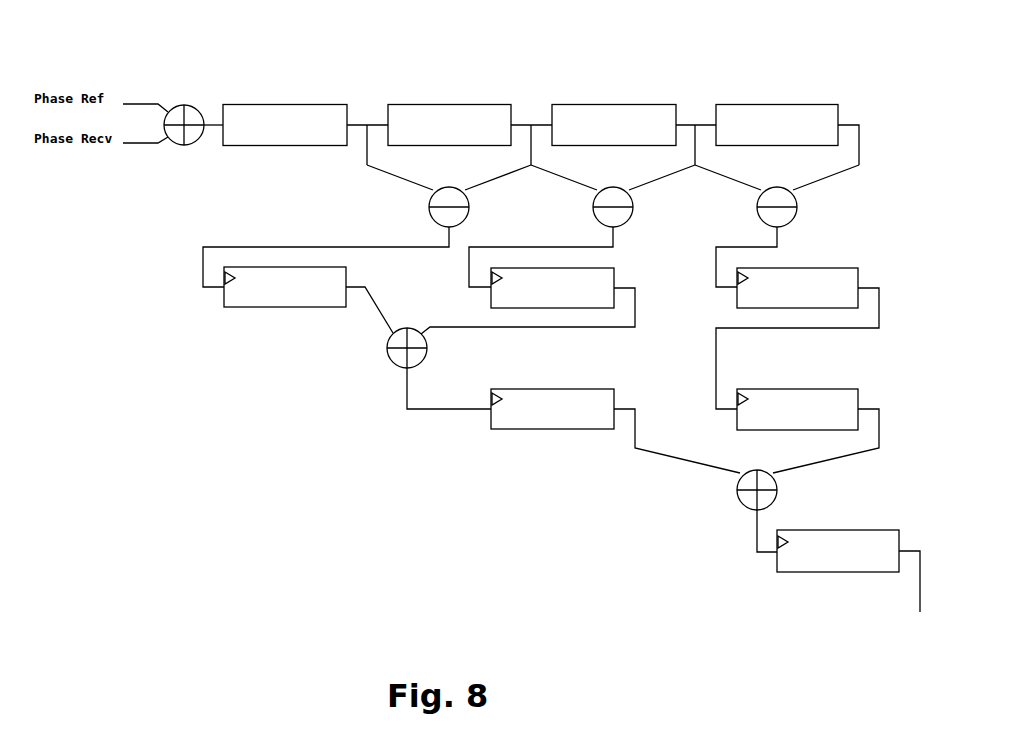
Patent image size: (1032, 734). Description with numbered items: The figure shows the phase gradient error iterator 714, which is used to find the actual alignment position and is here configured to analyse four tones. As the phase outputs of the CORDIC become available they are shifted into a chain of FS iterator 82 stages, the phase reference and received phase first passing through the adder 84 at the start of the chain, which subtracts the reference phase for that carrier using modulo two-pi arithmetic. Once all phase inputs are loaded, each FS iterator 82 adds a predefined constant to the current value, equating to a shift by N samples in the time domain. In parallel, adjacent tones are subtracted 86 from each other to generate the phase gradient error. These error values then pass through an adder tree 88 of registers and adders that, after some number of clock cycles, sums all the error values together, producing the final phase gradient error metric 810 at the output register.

The FS iterator 82 is at (292, 110).
The adder 84 is at (177, 138).
The subtractor 86 is at (432, 211).
The adder tree 88 is at (252, 360).
The phase gradient error iterator 714 is at (541, 87).
The final phase gradient error metric 810 is at (730, 575).